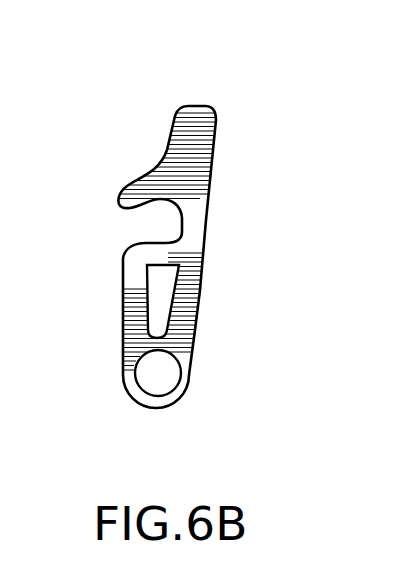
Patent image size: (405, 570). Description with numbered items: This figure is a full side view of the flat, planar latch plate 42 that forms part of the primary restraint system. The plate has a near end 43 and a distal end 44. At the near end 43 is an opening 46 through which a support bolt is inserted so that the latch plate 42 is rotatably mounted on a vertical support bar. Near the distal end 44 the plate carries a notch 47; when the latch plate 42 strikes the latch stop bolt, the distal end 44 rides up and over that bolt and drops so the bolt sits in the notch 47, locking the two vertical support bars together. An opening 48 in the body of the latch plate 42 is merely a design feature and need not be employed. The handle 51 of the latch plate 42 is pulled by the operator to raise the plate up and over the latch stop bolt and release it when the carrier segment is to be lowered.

The flat, planar latch plate 42 is at (134, 112).
The handle 51 is at (216, 122).
The distal end 44 is at (232, 122).
The notch 47 is at (125, 228).
The opening 48 is at (160, 308).
The opening 46 is at (162, 368).
The near end 43 is at (184, 398).